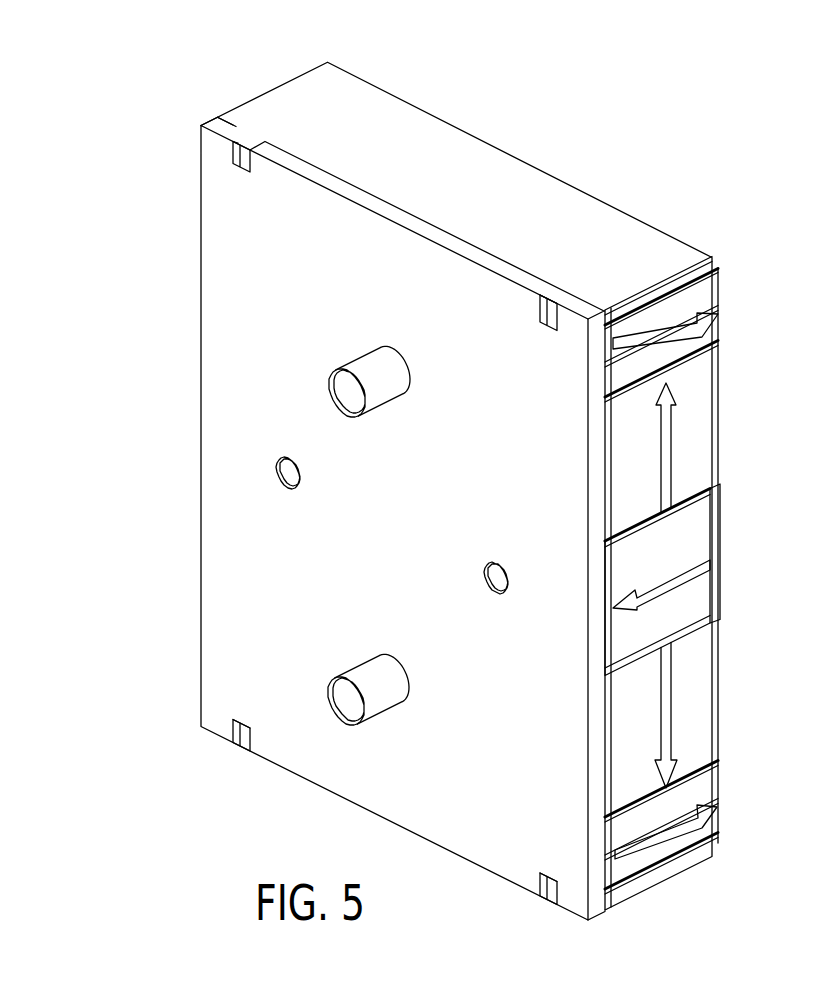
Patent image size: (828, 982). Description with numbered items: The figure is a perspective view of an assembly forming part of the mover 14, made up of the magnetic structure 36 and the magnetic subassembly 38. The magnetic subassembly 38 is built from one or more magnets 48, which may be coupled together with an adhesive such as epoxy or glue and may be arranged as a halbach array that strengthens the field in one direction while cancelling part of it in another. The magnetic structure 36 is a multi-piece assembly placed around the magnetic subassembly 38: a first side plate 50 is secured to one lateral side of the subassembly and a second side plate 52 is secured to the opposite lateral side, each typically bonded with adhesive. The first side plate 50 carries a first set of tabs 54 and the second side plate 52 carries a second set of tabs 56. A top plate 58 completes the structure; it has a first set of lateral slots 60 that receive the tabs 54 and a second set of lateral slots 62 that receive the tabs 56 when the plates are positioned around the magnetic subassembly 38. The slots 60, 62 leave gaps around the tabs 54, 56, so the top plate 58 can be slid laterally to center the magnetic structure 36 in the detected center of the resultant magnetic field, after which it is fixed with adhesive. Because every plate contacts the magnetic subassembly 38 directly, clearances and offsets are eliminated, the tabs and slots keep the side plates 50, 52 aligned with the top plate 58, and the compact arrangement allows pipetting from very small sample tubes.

The mover 14 is at (422, 487).
The magnetic structure 36 is at (457, 483).
The magnetic subassembly 38 is at (762, 581).
The magnets 48 is at (722, 416).
The first side plate 50 is at (472, 180).
The second side plate 52 is at (660, 884).
The first set of tabs 54 is at (247, 140).
The second set of tabs 56 is at (240, 750).
The top plate 58 is at (265, 234).
The first set of lateral slots 60 is at (240, 171).
The second set of lateral slots 62 is at (235, 719).